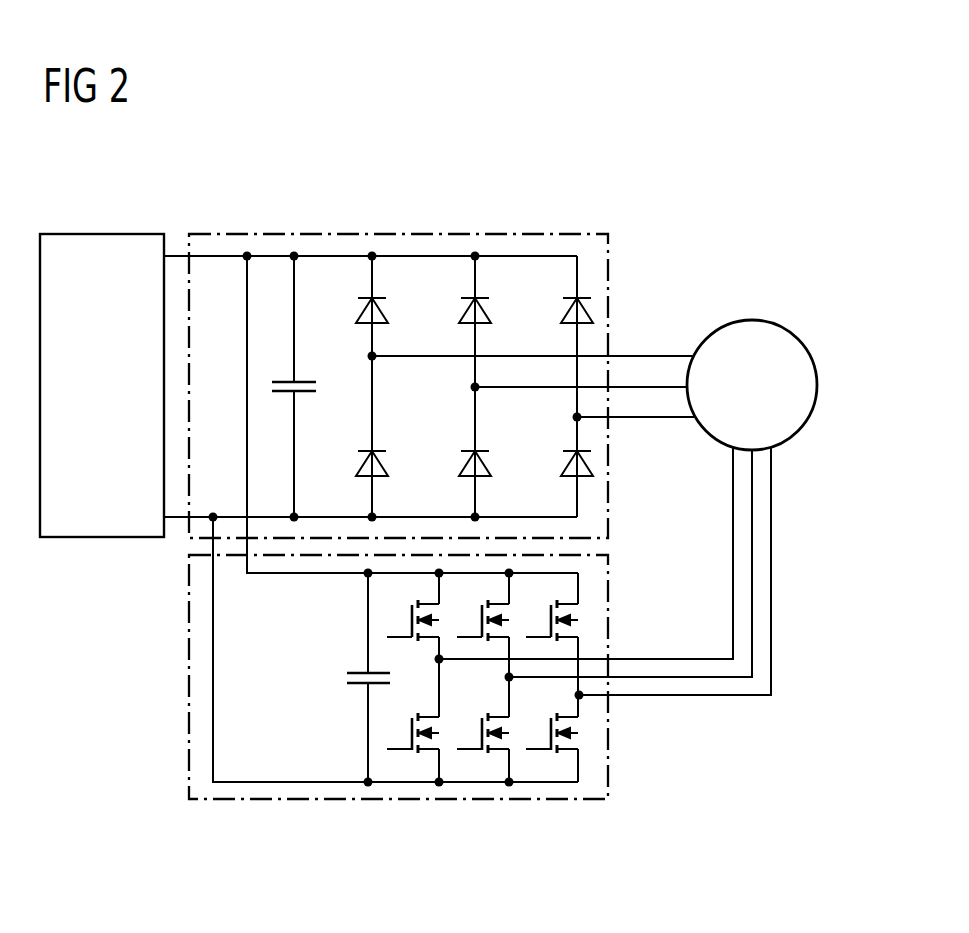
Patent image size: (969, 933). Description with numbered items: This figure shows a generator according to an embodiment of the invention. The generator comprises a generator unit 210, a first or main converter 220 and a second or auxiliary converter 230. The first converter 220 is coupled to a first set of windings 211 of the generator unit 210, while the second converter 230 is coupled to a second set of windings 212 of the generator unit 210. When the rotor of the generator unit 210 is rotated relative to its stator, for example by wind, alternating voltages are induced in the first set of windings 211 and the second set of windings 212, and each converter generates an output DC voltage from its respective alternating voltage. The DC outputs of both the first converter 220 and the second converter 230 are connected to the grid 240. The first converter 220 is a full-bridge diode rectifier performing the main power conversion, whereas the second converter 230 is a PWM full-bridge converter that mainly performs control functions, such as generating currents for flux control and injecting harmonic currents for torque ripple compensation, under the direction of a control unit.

The generator unit 210 is at (750, 318).
The first set of windings 211 is at (650, 352).
The second set of windings 212 is at (771, 572).
The first converter 220 is at (407, 233).
The second converter 230 is at (188, 683).
The grid 240 is at (100, 233).